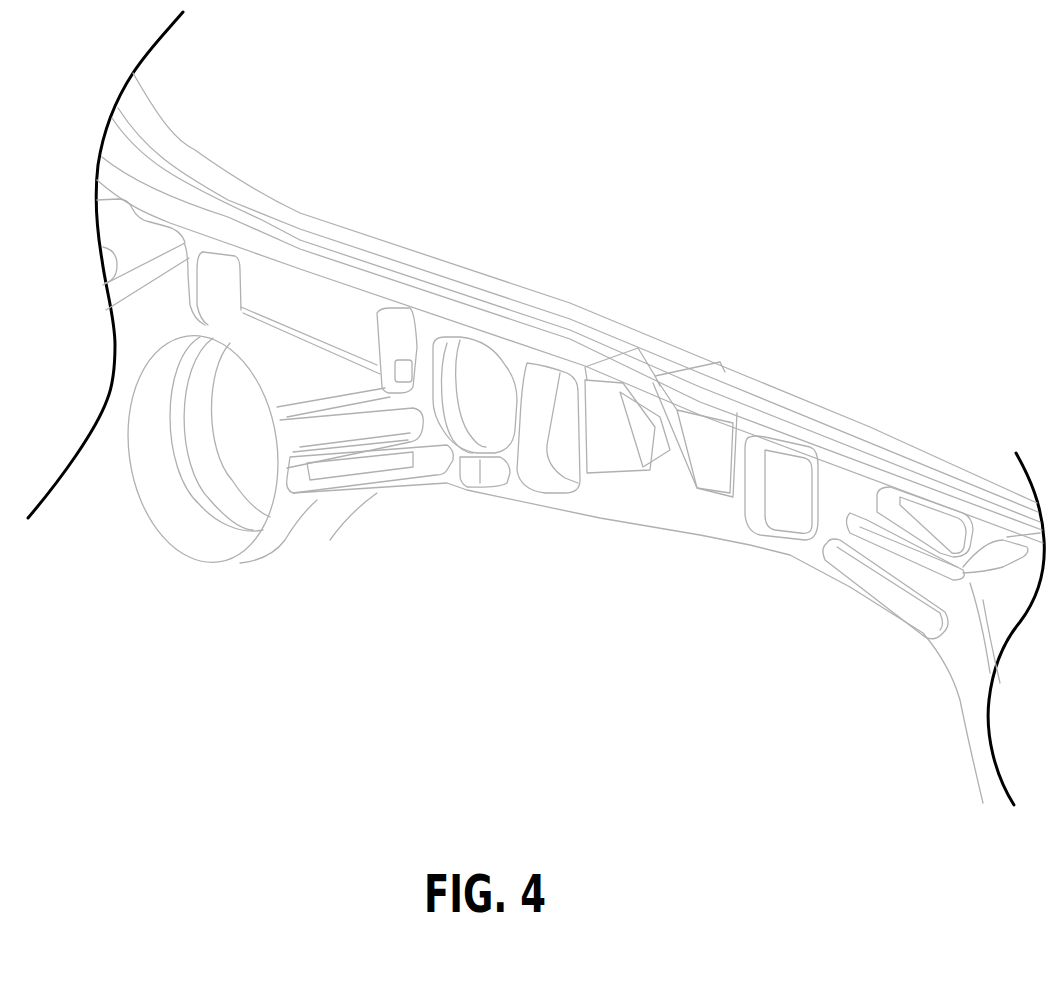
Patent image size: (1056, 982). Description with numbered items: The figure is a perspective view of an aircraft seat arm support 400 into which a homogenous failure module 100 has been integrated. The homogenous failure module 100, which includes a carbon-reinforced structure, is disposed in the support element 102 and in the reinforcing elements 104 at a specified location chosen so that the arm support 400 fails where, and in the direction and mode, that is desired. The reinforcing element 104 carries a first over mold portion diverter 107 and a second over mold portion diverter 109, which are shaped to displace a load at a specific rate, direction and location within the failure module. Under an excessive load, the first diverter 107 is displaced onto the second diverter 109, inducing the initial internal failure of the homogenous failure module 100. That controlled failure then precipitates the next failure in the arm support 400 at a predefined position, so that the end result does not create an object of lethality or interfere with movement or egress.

The aircraft seat arm support 400 is at (196, 163).
The support element 102 is at (757, 397).
The reinforcing element 104 is at (642, 371).
The homogenous failure module 100 is at (645, 441).
The first over mold portion diverter 107 is at (667, 435).
The second over mold portion diverter 109 is at (690, 462).